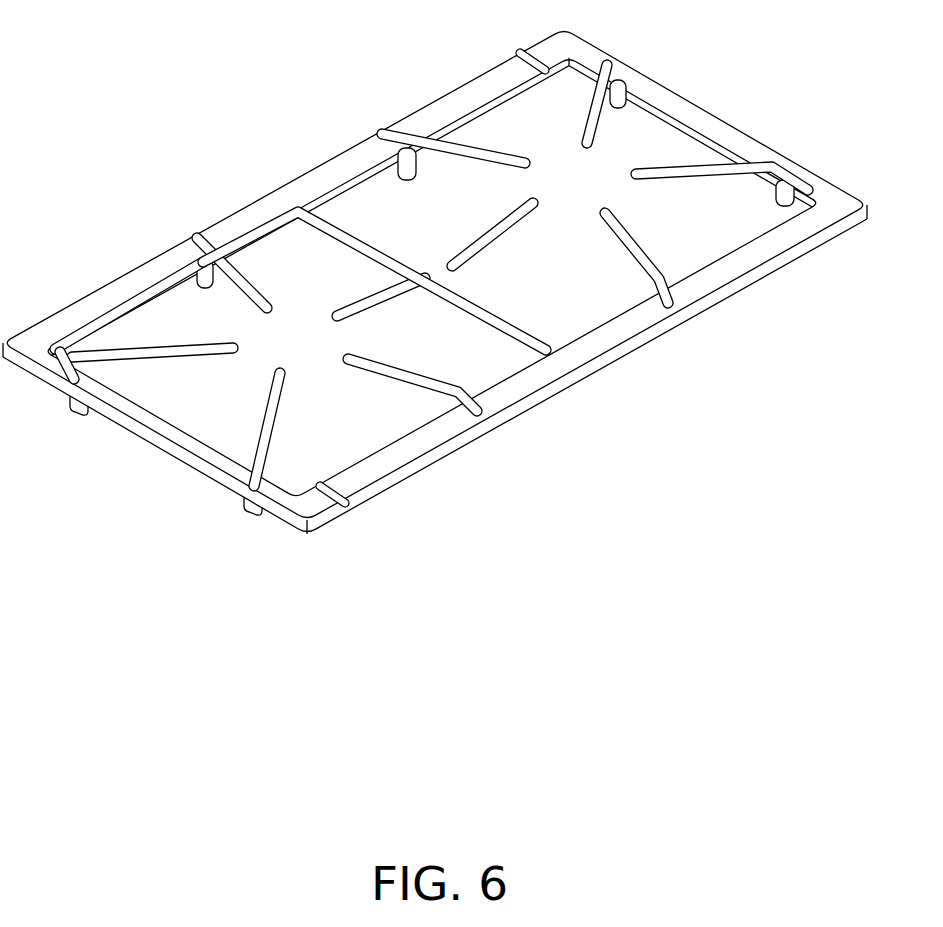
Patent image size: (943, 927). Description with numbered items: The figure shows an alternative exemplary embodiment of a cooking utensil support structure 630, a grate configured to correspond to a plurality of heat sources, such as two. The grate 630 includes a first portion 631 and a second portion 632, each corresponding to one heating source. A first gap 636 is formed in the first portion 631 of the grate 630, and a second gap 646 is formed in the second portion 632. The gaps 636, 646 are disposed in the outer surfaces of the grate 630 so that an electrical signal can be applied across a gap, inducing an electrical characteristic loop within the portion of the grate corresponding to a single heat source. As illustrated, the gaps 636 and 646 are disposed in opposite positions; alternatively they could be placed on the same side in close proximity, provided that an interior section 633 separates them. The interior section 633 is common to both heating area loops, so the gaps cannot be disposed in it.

The cooking utensil support structure 630 is at (435, 281).
The first portion 631 is at (533, 382).
The second portion 632 is at (465, 100).
The interior section 633 is at (483, 302).
The first gap 636 is at (350, 494).
The second gap 646 is at (527, 52).